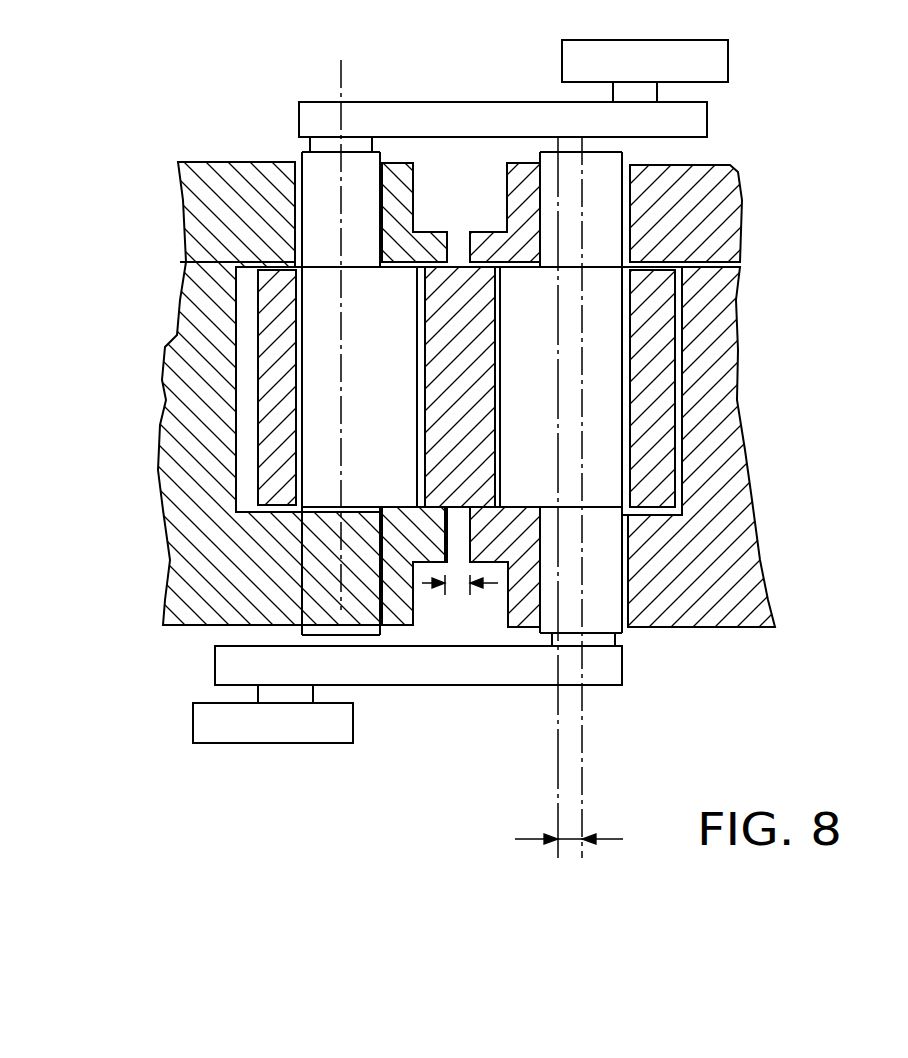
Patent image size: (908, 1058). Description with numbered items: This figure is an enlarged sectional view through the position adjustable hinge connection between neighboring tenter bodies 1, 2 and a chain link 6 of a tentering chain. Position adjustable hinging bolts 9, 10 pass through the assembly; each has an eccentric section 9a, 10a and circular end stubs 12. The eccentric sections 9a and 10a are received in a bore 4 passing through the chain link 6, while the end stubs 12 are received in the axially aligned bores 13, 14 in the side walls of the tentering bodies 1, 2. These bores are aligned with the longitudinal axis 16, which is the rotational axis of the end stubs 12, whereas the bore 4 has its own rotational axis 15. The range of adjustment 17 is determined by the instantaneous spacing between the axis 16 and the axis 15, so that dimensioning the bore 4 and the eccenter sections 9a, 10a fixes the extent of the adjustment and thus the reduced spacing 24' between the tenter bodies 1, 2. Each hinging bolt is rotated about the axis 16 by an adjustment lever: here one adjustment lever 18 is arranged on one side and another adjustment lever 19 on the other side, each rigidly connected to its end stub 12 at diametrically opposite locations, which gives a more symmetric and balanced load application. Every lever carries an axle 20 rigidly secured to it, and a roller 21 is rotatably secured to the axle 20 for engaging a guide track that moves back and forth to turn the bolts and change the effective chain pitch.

The tenter body 1 is at (213, 170).
The tenter body 2 is at (692, 233).
The bore 4 is at (300, 325).
The chain link 6 is at (648, 300).
The position adjustable hinging bolt 9 is at (264, 393).
The eccentric section 9a is at (412, 398).
The position adjustable hinging bolt 10 is at (664, 392).
The eccentric section 10a is at (525, 387).
The circular end stub 12 is at (370, 220).
The bore 13 is at (662, 617).
The bore 14 is at (628, 195).
The rotational axis 15 is at (557, 793).
The longitudinal axis 16 is at (340, 80).
The range of adjustment 17 is at (583, 828).
The adjustment lever 18 is at (693, 122).
The adjustment lever 19 is at (432, 672).
The axle 20 is at (612, 95).
The roller 21 is at (712, 70).
The reduced spacing 24' is at (462, 579).